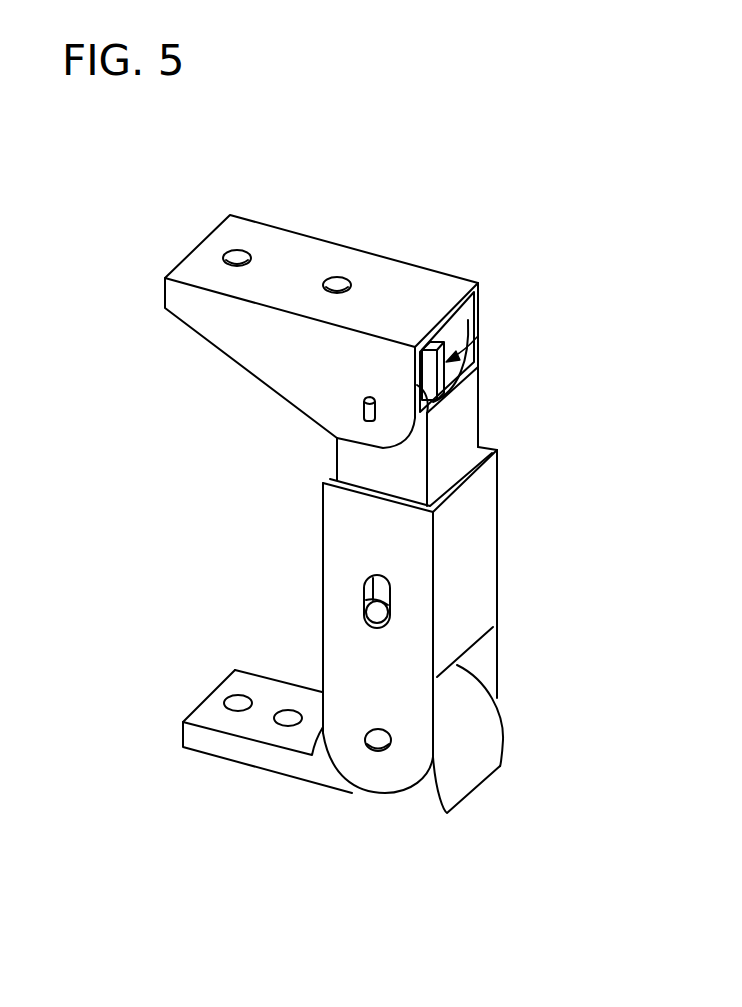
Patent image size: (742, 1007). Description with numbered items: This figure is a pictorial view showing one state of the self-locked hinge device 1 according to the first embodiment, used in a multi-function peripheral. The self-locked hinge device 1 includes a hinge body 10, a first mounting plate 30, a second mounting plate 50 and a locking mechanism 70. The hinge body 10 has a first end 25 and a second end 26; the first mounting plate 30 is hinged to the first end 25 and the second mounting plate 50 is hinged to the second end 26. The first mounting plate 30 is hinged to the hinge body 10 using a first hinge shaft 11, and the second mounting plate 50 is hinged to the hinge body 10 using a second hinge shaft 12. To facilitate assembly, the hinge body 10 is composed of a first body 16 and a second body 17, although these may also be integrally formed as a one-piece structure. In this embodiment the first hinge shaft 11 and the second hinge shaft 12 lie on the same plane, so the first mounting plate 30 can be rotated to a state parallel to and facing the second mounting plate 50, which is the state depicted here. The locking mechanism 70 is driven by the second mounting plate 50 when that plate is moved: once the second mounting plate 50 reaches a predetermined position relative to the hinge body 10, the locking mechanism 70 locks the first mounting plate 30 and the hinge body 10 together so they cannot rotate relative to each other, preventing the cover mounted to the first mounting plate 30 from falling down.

The self-locked hinge device 1 is at (371, 126).
The hinge body 10 is at (652, 482).
The first hinge shaft 11 is at (363, 412).
The second hinge shaft 12 is at (380, 744).
The first body 16 is at (457, 430).
The second body 17 is at (492, 583).
The first end 25 is at (477, 313).
The second end 26 is at (495, 698).
The first mounting plate 30 is at (302, 247).
The second mounting plate 50 is at (270, 757).
The locking mechanism 70 is at (477, 337).